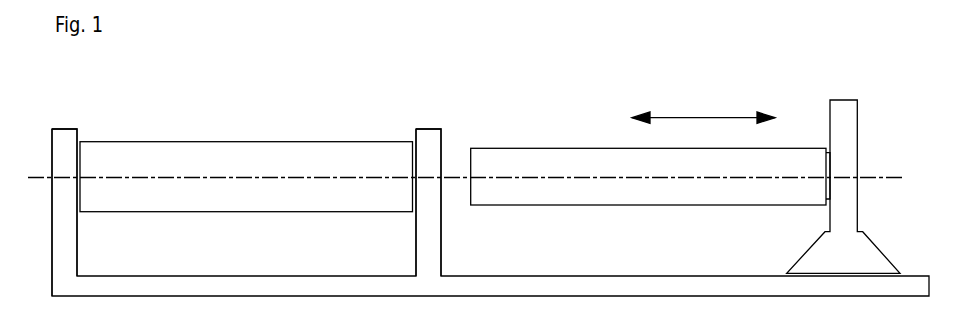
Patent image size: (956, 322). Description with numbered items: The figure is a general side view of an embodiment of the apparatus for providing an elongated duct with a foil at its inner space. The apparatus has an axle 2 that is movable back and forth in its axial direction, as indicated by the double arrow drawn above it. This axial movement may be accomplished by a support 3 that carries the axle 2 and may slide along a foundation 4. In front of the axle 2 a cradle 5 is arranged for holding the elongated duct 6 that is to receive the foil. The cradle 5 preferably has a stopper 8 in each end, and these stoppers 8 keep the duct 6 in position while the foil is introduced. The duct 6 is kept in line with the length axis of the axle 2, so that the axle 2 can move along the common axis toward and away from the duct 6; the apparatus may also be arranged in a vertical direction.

The axle 2 is at (607, 162).
The support 3 is at (859, 140).
The foundation 4 is at (515, 275).
The cradle 5 is at (63, 140).
The elongated duct 6 is at (227, 155).
The stopper 8 is at (52, 156).